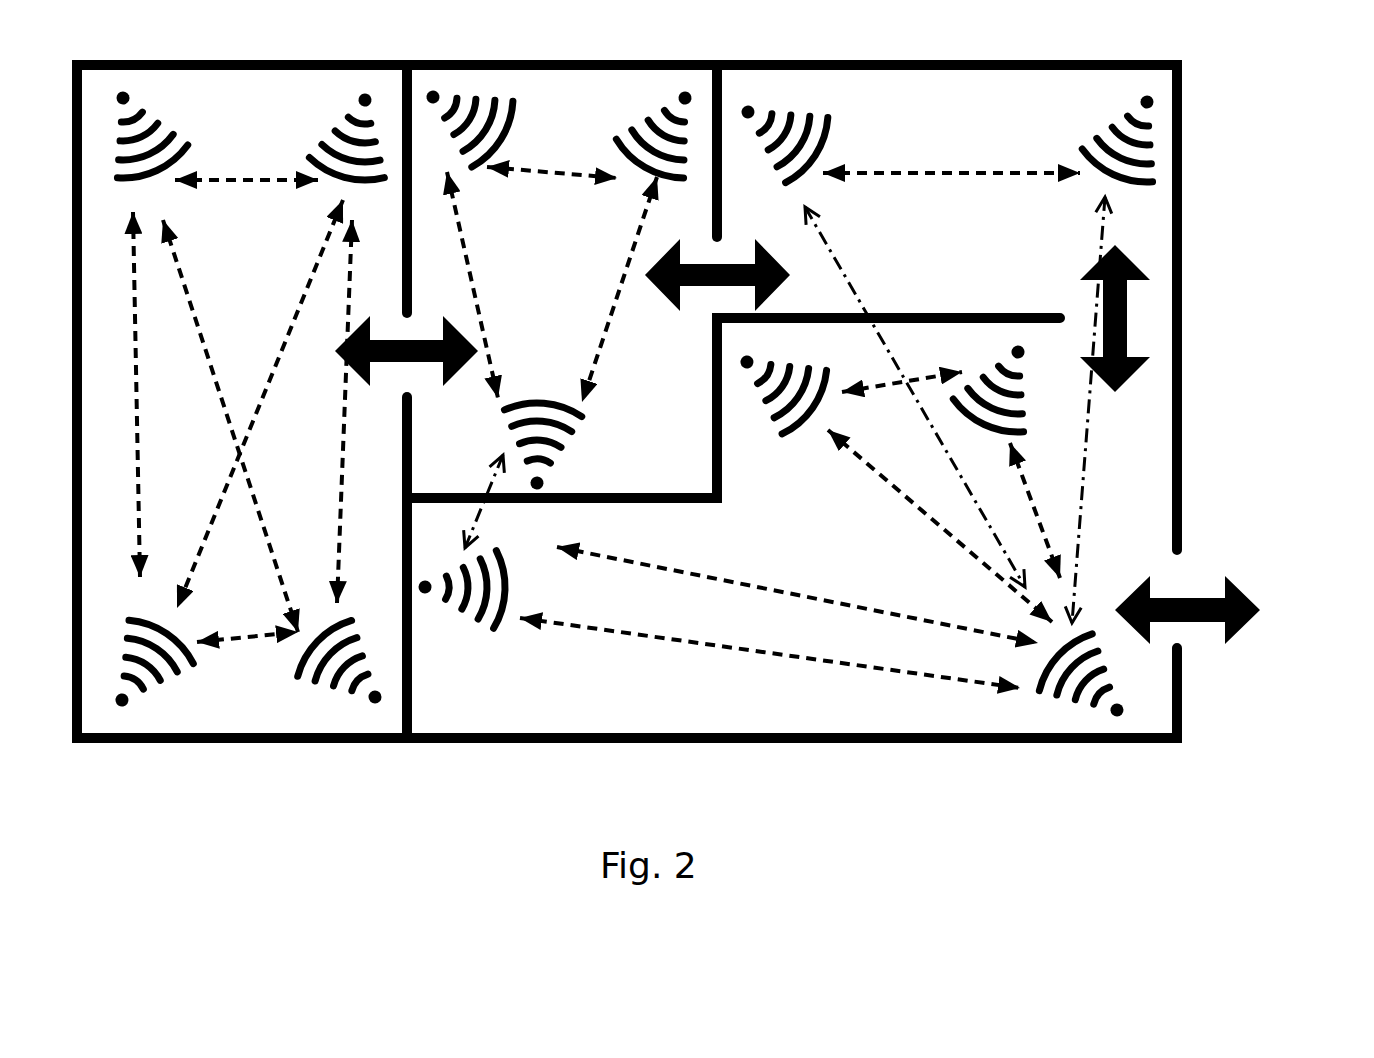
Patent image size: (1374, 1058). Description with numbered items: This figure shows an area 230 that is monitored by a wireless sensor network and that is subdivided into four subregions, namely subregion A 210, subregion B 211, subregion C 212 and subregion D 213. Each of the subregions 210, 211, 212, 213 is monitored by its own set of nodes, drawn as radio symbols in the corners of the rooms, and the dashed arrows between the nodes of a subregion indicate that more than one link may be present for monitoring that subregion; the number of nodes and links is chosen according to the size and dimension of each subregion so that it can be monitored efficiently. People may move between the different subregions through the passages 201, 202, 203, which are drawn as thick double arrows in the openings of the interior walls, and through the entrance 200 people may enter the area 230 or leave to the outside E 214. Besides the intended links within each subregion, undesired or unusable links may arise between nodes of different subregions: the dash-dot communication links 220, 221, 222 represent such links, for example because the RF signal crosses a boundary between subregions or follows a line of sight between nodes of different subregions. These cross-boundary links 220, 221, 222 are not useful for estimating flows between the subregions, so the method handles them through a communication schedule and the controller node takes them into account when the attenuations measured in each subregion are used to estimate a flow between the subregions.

The entrance 200 is at (1198, 598).
The passage 201 is at (1130, 328).
The passage 202 is at (738, 262).
The passage 203 is at (388, 374).
The subregion A 210 is at (231, 258).
The subregion B 211 is at (557, 246).
The subregion C 212 is at (937, 246).
The subregion D 213 is at (790, 522).
The outside E 214 is at (1290, 633).
The communication link 220 is at (1085, 490).
The communication link 221 is at (862, 297).
The communication link 222 is at (486, 507).
The area 230 is at (140, 743).